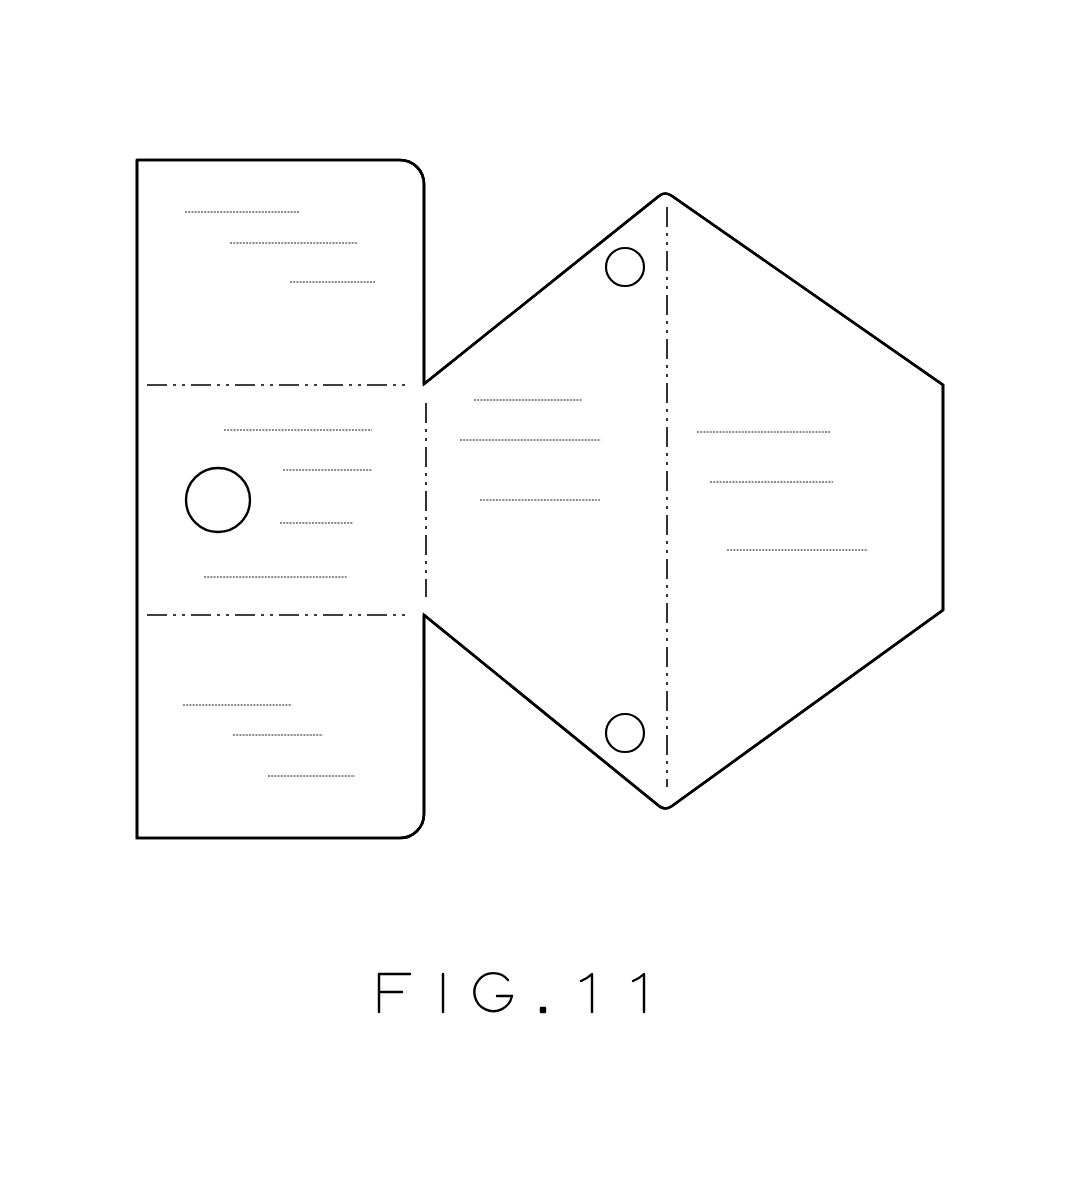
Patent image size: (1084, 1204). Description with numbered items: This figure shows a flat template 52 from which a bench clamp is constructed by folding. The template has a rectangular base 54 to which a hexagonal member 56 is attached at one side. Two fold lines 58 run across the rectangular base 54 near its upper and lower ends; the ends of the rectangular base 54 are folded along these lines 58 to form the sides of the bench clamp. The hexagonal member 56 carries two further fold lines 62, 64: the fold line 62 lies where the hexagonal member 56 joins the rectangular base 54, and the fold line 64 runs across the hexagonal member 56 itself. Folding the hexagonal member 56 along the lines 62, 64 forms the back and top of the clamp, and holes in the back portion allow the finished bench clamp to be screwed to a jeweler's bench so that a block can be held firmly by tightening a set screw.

The blank / foldable sheet 52 is at (453, 138).
The rectangular base 54 is at (237, 160).
The hexagonal member 56 is at (783, 266).
The fold lines 58 is at (199, 383).
The fold line 62 is at (427, 530).
The fold line 64 is at (667, 392).